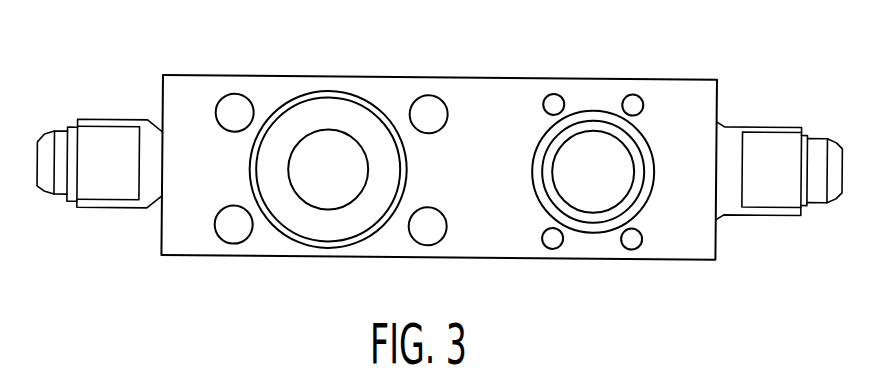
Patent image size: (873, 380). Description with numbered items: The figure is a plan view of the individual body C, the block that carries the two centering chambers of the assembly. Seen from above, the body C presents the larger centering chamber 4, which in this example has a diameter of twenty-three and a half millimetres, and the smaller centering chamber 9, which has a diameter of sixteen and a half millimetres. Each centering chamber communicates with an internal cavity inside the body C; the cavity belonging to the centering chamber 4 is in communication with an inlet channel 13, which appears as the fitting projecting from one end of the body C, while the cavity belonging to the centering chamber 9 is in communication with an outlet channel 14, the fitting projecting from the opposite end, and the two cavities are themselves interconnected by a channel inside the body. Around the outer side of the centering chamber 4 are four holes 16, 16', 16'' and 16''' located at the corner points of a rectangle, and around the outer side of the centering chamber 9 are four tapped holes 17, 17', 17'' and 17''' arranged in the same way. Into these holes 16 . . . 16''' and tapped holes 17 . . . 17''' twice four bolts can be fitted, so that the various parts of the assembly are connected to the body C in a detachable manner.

The centering chamber 4 is at (319, 91).
The centering chamber 9 is at (588, 115).
The inlet channel 13 is at (38, 163).
The outlet channel 14 is at (843, 170).
The hole 16 is at (218, 253).
The hole 16' is at (225, 74).
The hole 16'' is at (427, 74).
The hole 16''' is at (408, 254).
The tapped hole 17 is at (544, 265).
The tapped hole 17' is at (546, 66).
The tapped hole 17'' is at (649, 67).
The tapped hole 17''' is at (651, 265).
The body C is at (729, 280).